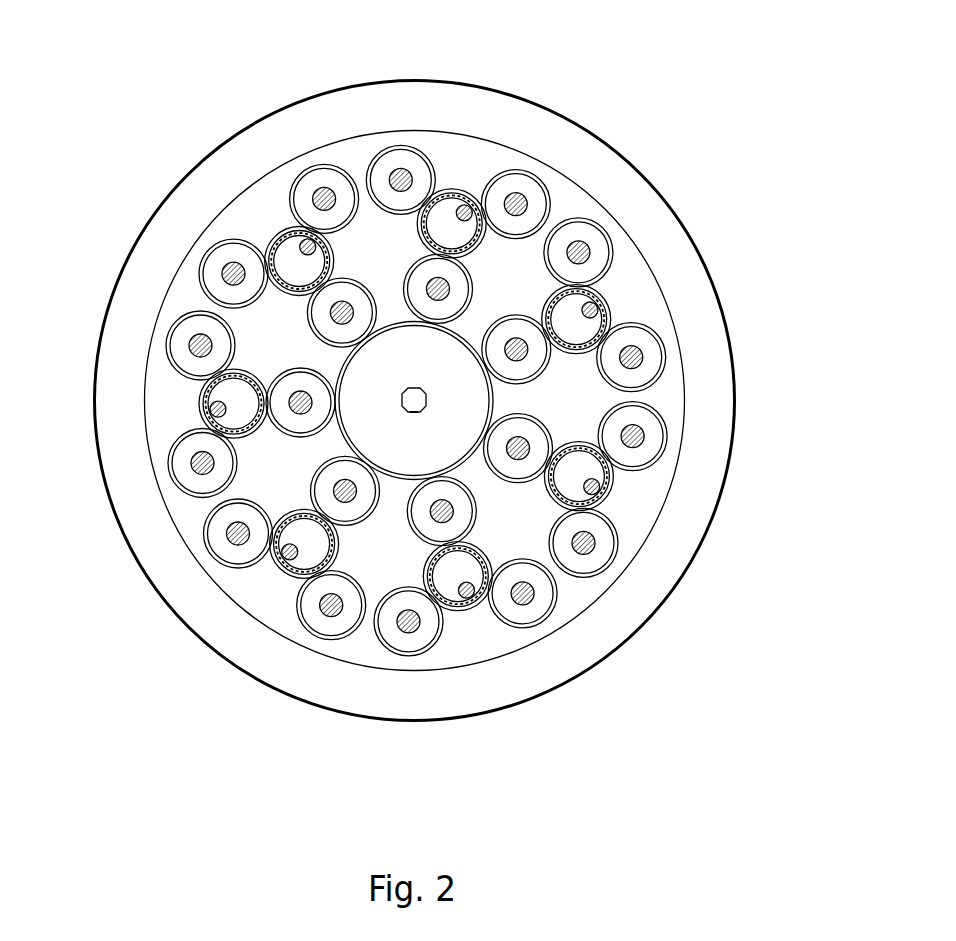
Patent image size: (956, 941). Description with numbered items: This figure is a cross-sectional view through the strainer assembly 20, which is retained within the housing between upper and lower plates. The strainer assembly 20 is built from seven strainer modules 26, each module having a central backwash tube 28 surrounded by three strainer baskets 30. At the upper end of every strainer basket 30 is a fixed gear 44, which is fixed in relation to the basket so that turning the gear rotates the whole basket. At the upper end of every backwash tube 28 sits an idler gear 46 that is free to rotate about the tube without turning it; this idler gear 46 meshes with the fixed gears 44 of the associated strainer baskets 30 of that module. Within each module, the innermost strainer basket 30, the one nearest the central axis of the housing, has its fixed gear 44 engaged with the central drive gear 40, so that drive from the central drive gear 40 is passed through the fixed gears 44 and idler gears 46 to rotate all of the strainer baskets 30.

The strainer assembly 20 is at (706, 132).
The strainer module 26 is at (226, 166).
The central backwash tube 28 is at (315, 227).
The strainer basket 30 is at (198, 266).
The central drive gear 40 is at (393, 460).
The fixed gear 44 is at (350, 276).
The idler gear 46 is at (452, 200).